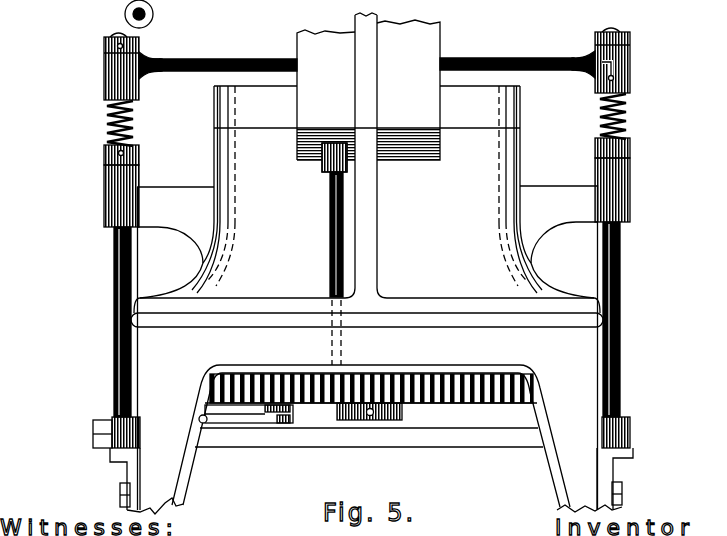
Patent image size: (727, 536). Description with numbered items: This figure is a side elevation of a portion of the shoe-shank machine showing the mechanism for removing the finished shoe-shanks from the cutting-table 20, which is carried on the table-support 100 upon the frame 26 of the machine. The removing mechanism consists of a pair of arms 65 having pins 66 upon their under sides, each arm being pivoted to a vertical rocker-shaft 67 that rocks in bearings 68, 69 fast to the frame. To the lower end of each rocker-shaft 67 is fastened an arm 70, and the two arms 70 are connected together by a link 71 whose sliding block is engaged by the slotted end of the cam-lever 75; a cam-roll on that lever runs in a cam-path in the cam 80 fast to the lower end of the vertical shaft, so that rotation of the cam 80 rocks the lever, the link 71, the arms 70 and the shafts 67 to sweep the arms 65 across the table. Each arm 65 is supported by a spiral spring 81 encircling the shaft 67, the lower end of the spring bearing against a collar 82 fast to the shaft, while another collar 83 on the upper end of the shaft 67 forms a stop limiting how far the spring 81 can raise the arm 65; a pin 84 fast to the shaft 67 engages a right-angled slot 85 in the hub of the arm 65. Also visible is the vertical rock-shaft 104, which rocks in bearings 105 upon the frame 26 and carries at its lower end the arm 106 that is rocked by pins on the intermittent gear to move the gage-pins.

The cutting-table 20 is at (494, 102).
The frame 26 is at (407, 43).
The arms 65 is at (547, 57).
The pins 66 is at (455, 60).
The vertical rocker-shaft 67 is at (622, 247).
The bearing 68 is at (630, 187).
The bearing 69 is at (107, 193).
The arm 70 is at (155, 3).
The link 71 is at (100, 440).
The cam-lever 75 is at (247, 418).
The cam 80 is at (437, 403).
The spiral spring 81 is at (107, 118).
The collar 82 is at (630, 148).
The collar 83 is at (628, 41).
The pin 84 is at (626, 73).
The right-angled slot 85 is at (613, 64).
The table-support 100 is at (240, 210).
The vertical rock-shaft 104 is at (332, 233).
The bearings 105 is at (322, 167).
The arm 106 is at (347, 362).